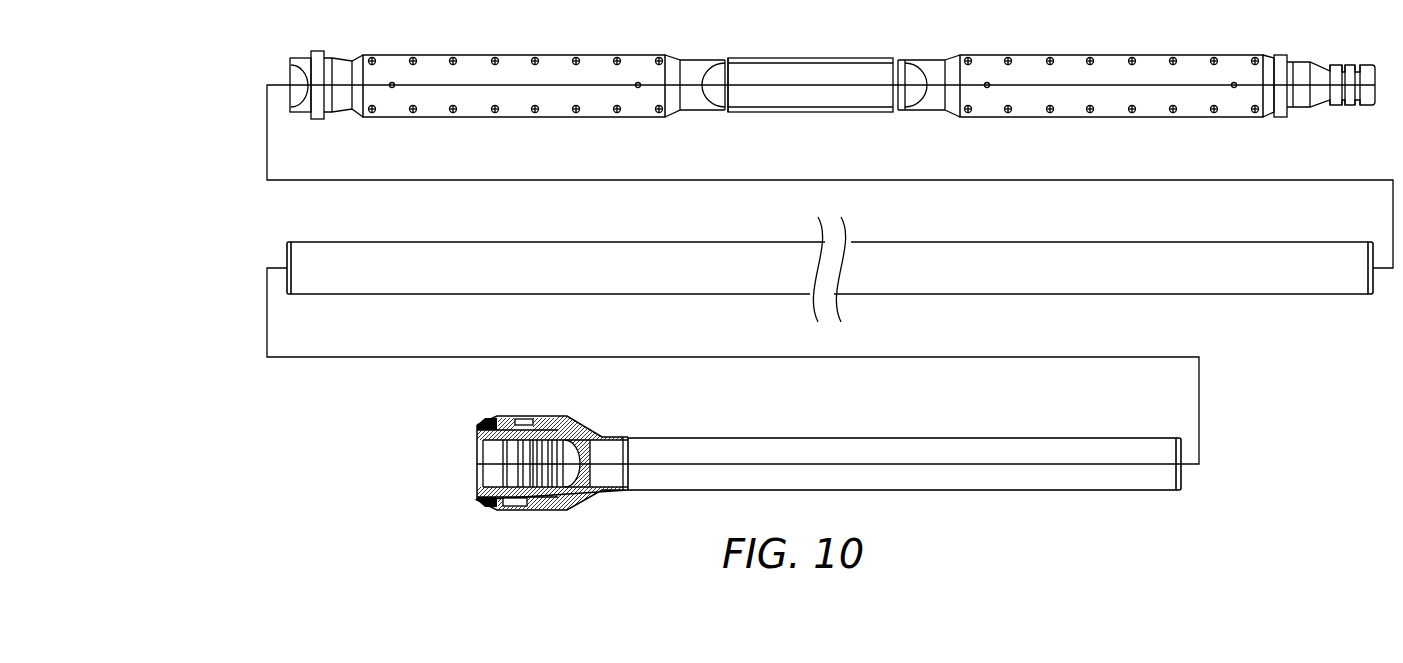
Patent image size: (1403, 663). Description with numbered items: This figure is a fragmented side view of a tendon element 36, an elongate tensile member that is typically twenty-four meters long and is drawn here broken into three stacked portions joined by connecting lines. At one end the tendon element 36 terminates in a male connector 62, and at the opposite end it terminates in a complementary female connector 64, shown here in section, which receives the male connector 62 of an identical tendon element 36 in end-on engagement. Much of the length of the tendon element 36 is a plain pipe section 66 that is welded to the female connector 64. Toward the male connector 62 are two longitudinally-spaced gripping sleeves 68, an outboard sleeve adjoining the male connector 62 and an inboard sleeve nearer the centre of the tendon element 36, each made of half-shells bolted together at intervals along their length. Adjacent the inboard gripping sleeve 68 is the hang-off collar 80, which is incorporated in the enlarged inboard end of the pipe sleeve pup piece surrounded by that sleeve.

The tendon element 36 is at (260, 62).
The hang-off collar 80 is at (317, 50).
The gripping sleeve 68 is at (516, 55).
The male connector 62 is at (1365, 64).
The plain pipe section 66 is at (966, 242).
The female connector 64 is at (537, 507).